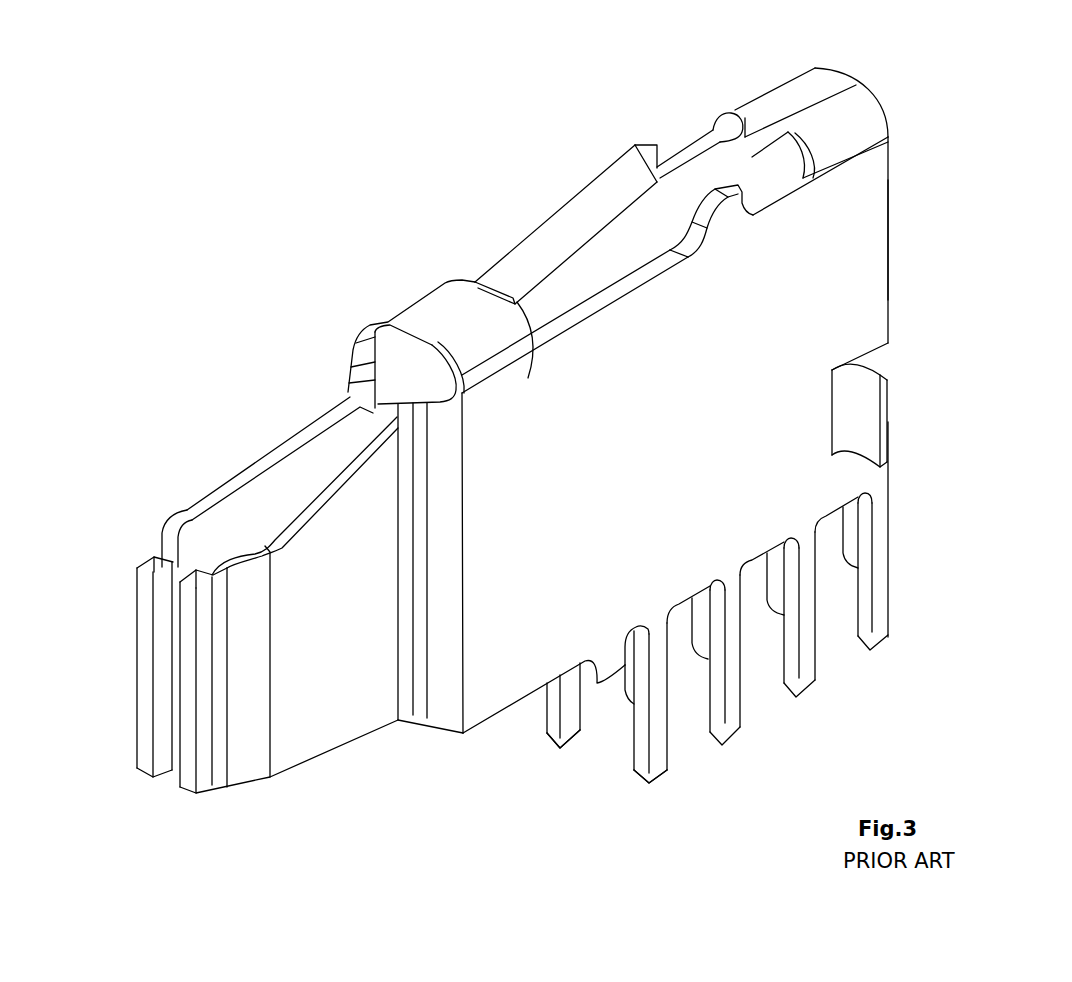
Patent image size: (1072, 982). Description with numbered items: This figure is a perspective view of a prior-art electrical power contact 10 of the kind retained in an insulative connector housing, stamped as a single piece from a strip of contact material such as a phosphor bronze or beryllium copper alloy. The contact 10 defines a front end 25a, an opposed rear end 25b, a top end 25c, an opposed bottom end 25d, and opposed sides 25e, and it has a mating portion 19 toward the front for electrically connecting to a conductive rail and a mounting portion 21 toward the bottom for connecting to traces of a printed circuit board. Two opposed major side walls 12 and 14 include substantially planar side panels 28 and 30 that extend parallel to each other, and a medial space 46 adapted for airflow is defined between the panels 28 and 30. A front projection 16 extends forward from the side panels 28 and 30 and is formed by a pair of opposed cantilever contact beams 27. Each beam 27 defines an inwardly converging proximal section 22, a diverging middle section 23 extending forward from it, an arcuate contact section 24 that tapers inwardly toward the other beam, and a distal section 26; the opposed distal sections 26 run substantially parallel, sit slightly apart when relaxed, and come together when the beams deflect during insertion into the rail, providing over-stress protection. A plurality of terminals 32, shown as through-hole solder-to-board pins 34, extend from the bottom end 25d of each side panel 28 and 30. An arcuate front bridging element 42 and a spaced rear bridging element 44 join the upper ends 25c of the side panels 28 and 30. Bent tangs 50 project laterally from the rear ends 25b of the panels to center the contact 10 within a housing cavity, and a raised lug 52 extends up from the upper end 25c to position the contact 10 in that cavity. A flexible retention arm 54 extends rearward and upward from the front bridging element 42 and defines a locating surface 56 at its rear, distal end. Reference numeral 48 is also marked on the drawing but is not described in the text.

The electrical contact 10 is at (625, 90).
The major side wall 12 is at (747, 476).
The major side wall 14 is at (700, 137).
The front projection 16 is at (125, 590).
The mating portion 19 is at (155, 788).
The mounting portion 21 is at (870, 695).
The proximal section 22 is at (350, 372).
The middle section 23 is at (267, 447).
The contact section 24 is at (160, 520).
The front end 25a is at (143, 640).
The rear end 25b is at (905, 152).
The top end 25c is at (560, 195).
The bottom end 25d is at (490, 735).
The side 25e is at (485, 248).
The distal section 26 is at (147, 690).
The cantilever contact beam 27 is at (290, 520).
The side panel 28 is at (855, 212).
The side panel 30 is at (682, 162).
The terminal 32 is at (572, 750).
The through-hole pin 34 is at (543, 730).
The front bridging element 42 is at (443, 317).
The rear bridging element 44 is at (753, 158).
The medial space 46 is at (800, 108).
The short tail 48 is at (607, 665).
The bent tang 50 is at (882, 395).
The raised lug 52 is at (725, 218).
The flexible retention arm 54 is at (543, 247).
The locating surface 56 is at (630, 150).